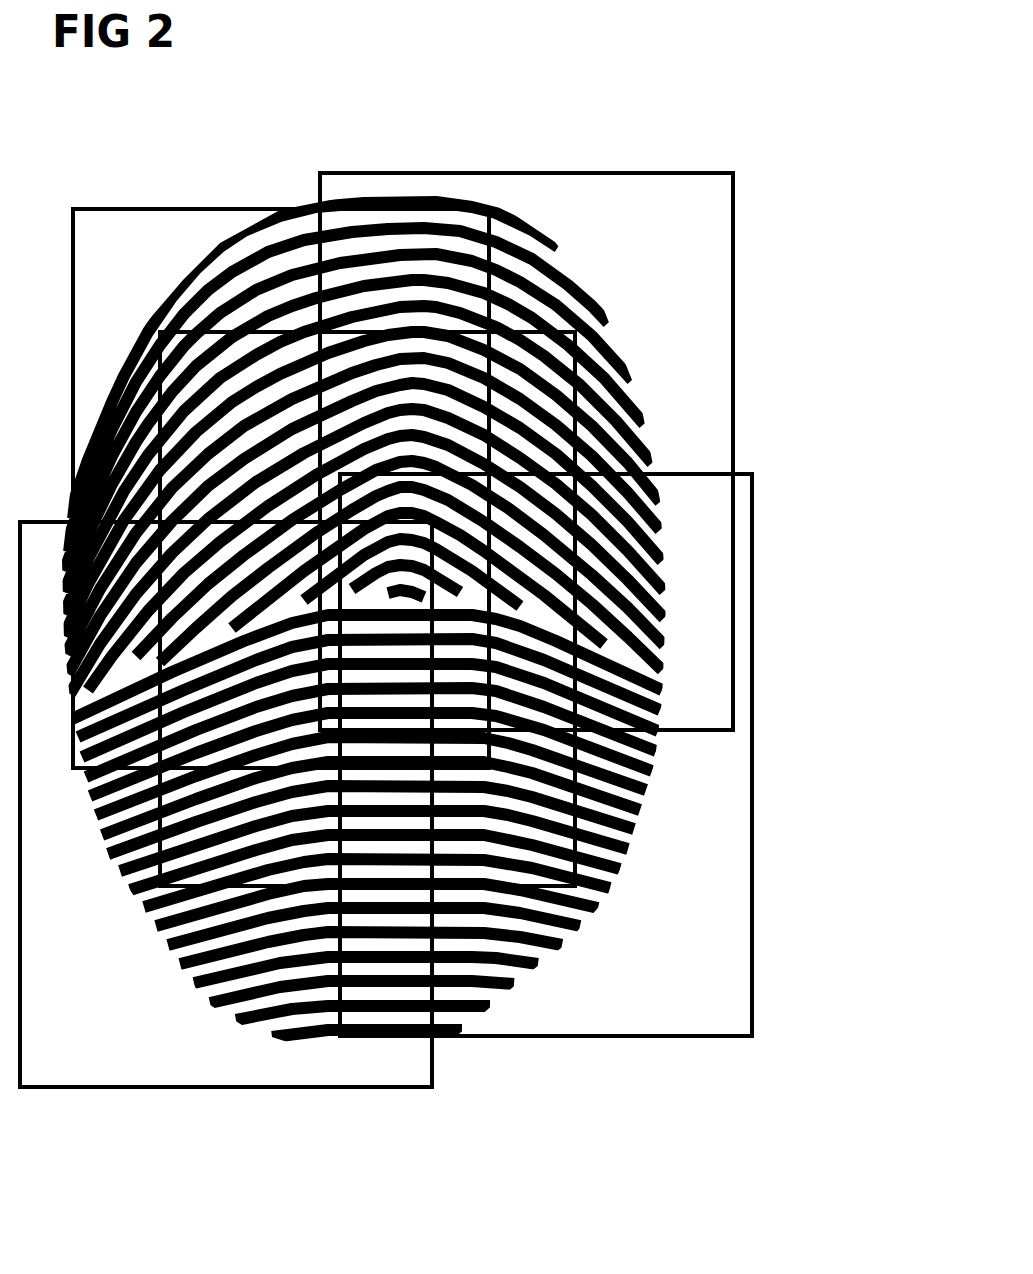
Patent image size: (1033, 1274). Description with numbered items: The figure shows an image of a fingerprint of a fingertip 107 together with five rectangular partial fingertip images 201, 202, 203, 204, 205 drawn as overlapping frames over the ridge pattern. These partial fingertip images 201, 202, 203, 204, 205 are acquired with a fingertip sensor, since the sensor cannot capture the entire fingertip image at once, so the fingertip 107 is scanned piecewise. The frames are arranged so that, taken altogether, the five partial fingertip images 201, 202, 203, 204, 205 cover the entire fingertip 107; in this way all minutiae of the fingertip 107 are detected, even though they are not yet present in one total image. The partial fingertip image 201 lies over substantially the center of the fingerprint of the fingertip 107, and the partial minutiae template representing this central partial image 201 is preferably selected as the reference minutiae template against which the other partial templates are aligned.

The fingertip 107 is at (510, 233).
The partial fingertip image 201 is at (667, 342).
The partial fingertip image 202 is at (117, 236).
The partial fingertip image 203 is at (132, 1057).
The partial fingertip image 204 is at (722, 995).
The partial fingertip image 205 is at (708, 242).